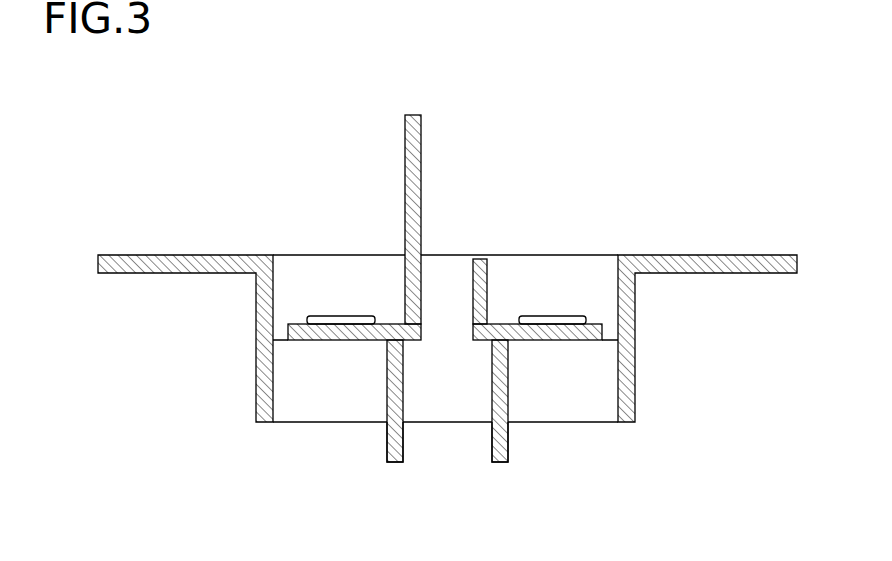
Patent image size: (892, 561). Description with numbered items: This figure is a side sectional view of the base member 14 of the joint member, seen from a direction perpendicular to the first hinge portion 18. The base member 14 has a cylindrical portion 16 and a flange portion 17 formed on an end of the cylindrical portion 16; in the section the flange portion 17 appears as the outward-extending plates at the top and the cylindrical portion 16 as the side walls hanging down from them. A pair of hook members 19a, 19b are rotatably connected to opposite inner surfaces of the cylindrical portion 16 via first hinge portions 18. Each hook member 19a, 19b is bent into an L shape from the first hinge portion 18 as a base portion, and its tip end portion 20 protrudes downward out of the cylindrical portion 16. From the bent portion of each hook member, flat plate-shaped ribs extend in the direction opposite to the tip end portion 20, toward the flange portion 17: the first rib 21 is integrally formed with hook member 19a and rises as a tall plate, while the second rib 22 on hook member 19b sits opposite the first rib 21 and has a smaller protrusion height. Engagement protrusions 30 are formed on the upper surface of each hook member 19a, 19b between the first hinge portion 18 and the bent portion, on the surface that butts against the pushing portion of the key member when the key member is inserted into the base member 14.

The base member 14 is at (678, 195).
The cylindrical portion 16 is at (635, 375).
The flange portion 17 is at (157, 255).
The first hinge portion 18 is at (285, 332).
The hook member 19a is at (387, 385).
The hook member 19b is at (508, 385).
The tip end portion 20 is at (397, 462).
The first rib 21 is at (405, 208).
The second rib 22 is at (487, 279).
The engagement protrusion 30 is at (331, 316).